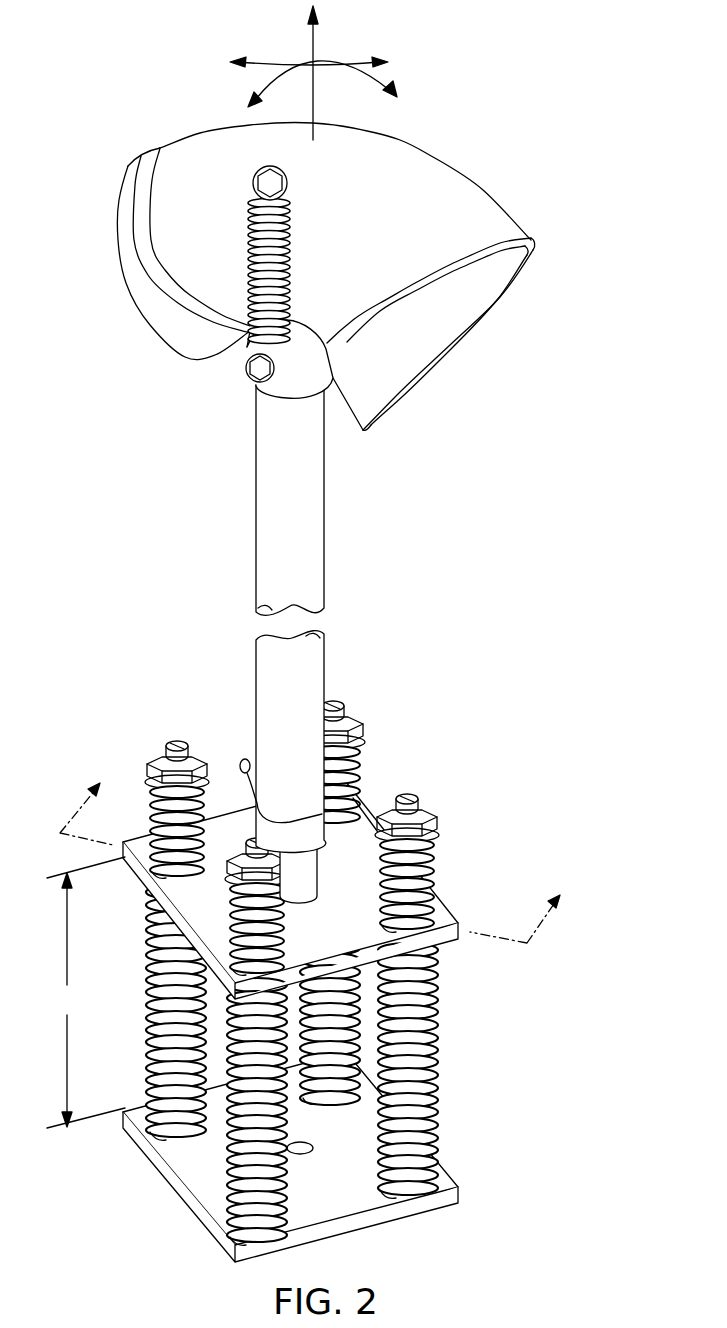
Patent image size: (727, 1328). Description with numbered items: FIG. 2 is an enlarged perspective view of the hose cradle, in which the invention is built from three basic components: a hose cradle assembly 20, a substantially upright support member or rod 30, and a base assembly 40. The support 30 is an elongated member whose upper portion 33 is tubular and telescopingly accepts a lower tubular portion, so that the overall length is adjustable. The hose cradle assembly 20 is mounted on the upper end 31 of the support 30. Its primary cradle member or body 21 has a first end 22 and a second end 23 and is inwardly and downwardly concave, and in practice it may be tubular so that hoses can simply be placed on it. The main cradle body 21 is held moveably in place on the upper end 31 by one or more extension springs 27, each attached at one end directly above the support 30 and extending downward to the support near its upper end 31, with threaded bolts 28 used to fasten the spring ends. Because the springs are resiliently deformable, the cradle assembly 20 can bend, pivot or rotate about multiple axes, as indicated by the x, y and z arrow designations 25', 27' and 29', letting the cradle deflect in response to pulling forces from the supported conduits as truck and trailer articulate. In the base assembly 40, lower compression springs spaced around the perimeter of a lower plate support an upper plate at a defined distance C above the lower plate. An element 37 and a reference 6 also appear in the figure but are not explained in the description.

The hose cradle assembly 20 is at (577, 431).
The primary cradle member 21 is at (436, 166).
The first end 22 is at (127, 288).
The second end 23 is at (436, 378).
The arrow designation 25' is at (286, 43).
The extension spring 27 is at (304, 271).
The arrow designation 27' is at (324, 55).
The threaded bolt 28 is at (257, 181).
The arrow designation 29' is at (284, 71).
The support member 30 is at (352, 906).
The upper end 31 is at (283, 388).
The upper portion 33 is at (272, 528).
The safety cable 37 is at (245, 760).
The base assembly 40 is at (597, 1242).
The section line 6 is at (304, 865).
The defined distance C is at (86, 992).